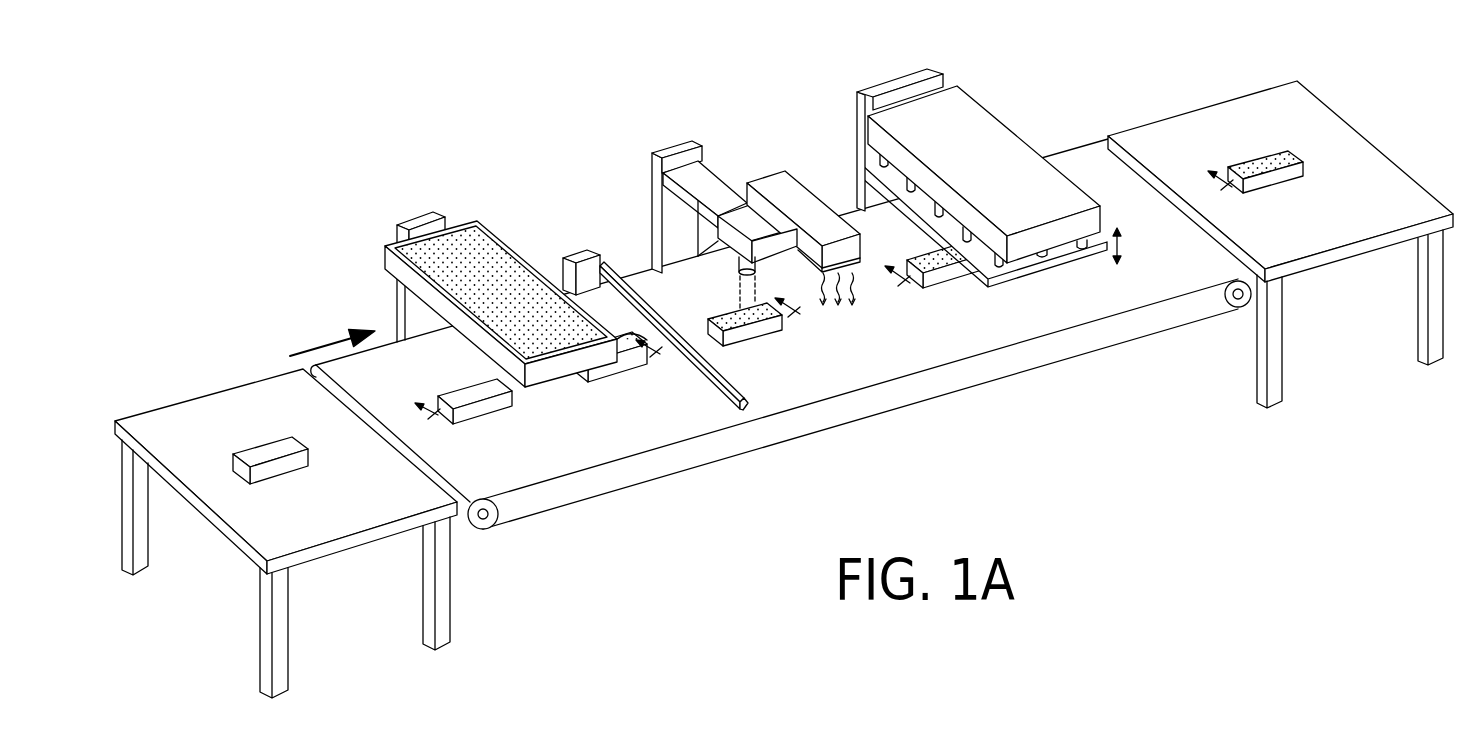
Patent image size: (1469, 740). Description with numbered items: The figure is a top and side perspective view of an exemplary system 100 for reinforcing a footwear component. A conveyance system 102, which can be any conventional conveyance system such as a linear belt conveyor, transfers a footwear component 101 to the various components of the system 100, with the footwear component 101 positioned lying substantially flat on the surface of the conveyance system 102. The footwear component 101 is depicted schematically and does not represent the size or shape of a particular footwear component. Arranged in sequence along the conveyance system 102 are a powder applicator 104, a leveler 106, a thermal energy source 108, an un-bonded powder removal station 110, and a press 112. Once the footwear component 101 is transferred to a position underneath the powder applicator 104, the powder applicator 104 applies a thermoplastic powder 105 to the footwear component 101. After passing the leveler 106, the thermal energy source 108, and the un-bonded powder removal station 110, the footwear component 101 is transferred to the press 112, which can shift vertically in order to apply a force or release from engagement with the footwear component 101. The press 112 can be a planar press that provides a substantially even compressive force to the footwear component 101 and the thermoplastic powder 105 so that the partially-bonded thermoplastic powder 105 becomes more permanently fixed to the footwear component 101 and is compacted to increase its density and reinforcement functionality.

The system 100 is at (240, 152).
The footwear component 101 is at (488, 410).
The conveyance system 102 is at (538, 467).
The powder applicator 104 is at (494, 284).
The thermoplastic powder 105 is at (467, 240).
The leveler 106 is at (633, 308).
The thermal energy source 108 is at (728, 233).
The un-bonded powder removal station 110 is at (778, 187).
The press 112 is at (967, 108).